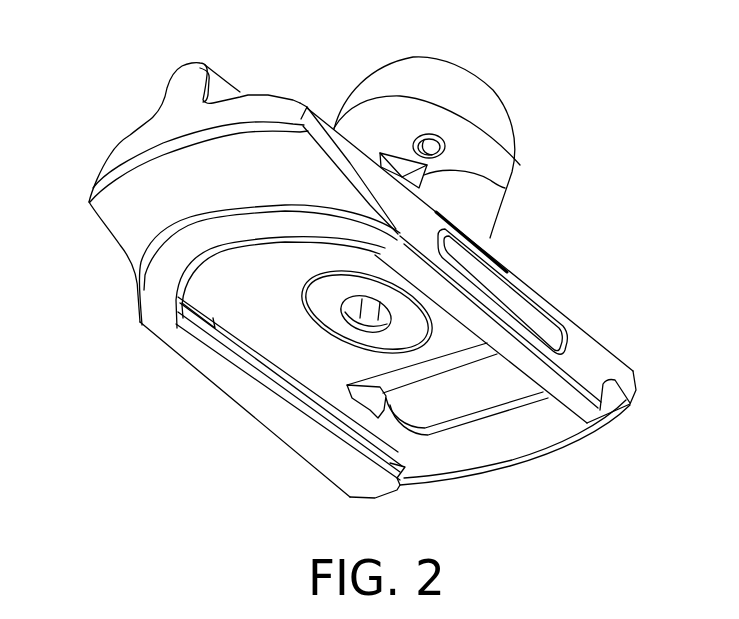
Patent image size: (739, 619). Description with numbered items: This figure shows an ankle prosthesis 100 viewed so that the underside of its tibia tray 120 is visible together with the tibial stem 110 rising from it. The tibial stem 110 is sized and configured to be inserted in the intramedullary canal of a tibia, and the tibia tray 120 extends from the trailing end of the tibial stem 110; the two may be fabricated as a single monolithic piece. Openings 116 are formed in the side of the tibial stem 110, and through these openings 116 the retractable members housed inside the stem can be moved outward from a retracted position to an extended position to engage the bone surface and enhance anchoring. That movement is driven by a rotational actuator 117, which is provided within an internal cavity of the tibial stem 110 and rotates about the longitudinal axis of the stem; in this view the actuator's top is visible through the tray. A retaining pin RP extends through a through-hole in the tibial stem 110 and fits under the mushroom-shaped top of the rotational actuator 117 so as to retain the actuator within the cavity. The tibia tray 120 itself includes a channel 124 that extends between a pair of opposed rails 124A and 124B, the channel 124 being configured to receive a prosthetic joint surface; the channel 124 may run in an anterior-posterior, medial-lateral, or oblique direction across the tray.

The ankle prosthesis 100 is at (95, 62).
The tibial stem 110 is at (481, 100).
The retaining pin RP is at (426, 134).
The openings 116 is at (503, 190).
The tibia tray 120 is at (114, 173).
The rotational actuator 117 is at (340, 310).
The channel 124 is at (612, 477).
The rail 124A is at (297, 437).
The rail 124B is at (599, 357).